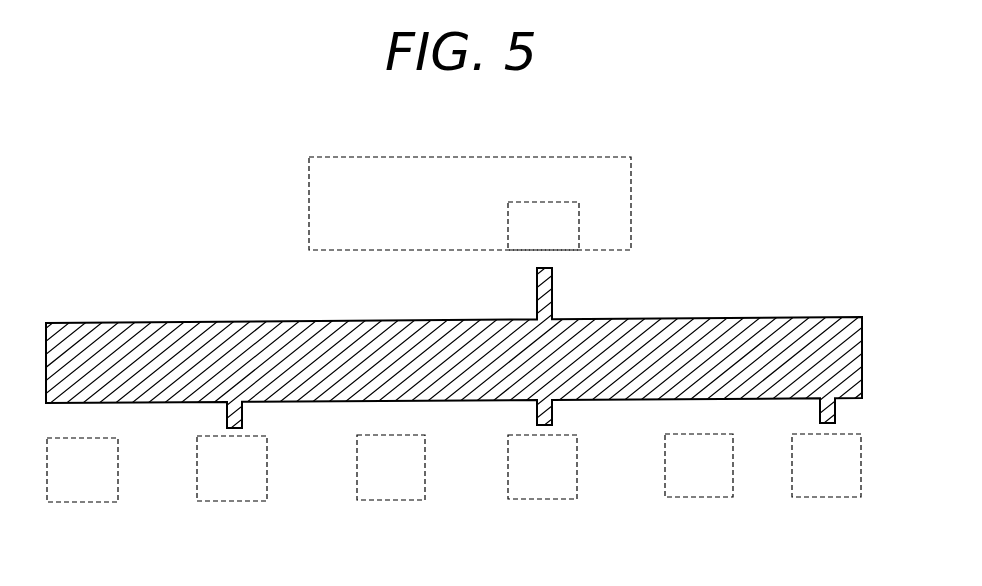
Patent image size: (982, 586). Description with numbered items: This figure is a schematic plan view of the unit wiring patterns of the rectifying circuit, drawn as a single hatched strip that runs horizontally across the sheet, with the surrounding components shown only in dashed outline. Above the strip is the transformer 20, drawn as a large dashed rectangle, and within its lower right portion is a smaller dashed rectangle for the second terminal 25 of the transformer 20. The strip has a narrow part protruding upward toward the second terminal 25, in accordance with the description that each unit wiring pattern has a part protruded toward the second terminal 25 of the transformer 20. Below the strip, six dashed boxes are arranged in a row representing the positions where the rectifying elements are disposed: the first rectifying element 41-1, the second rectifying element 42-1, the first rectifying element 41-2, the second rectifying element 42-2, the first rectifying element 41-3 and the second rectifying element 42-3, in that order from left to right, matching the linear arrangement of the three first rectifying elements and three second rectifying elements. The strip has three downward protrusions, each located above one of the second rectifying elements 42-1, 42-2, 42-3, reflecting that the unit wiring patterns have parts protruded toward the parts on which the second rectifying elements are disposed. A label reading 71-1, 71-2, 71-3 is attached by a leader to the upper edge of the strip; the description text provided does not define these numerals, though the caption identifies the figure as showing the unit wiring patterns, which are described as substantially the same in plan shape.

The transformer 20 is at (633, 178).
The second terminal 25 is at (560, 200).
The rib 71-1 is at (491, 350).
The rib 71-2 is at (234, 415).
The rib 71-3 is at (827, 410).
The first rectifying element 41-1 is at (82, 470).
The first rectifying element 41-2 is at (391, 467).
The first rectifying element 41-3 is at (699, 465).
The second rectifying element 42-1 is at (232, 468).
The second rectifying element 42-2 is at (542, 467).
The second rectifying element 42-3 is at (826, 465).